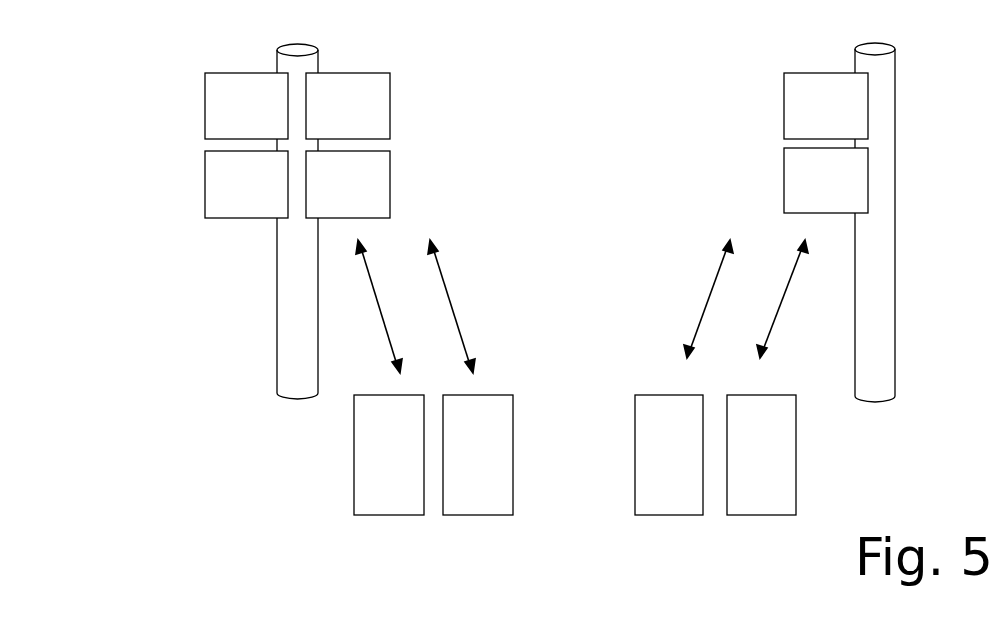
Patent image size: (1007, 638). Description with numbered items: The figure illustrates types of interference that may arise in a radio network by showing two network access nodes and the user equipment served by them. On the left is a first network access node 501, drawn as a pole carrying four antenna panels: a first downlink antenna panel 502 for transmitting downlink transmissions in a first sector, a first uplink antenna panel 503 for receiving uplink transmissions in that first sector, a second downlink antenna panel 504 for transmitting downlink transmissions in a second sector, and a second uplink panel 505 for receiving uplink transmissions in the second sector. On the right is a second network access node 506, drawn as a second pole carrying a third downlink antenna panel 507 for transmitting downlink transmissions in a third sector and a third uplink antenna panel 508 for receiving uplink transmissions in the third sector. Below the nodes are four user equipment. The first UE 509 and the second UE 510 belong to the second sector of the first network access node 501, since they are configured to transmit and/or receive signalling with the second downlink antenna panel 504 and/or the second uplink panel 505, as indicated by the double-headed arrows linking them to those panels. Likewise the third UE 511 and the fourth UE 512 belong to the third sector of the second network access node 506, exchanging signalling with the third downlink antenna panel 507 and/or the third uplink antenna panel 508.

The first network access node 501 is at (277, 47).
The first downlink antenna panel 502 is at (227, 118).
The first uplink antenna panel 503 is at (227, 197).
The second downlink antenna panel 504 is at (329, 118).
The second uplink panel 505 is at (329, 197).
The second network access node 506 is at (895, 77).
The third downlink antenna panel 507 is at (807, 120).
The third uplink antenna panel 508 is at (807, 194).
The first user equipment 509 is at (370, 467).
The second user equipment 510 is at (459, 467).
The third user equipment 511 is at (650, 467).
The fourth user equipment 512 is at (742, 467).